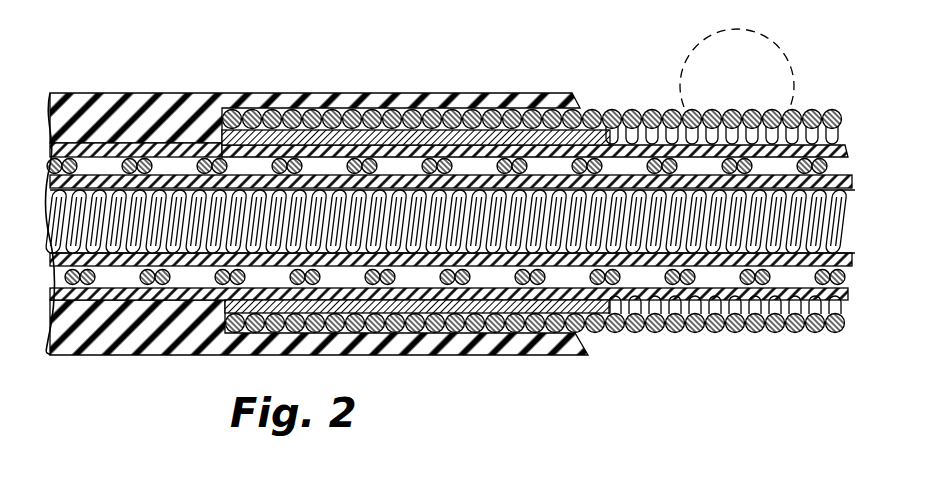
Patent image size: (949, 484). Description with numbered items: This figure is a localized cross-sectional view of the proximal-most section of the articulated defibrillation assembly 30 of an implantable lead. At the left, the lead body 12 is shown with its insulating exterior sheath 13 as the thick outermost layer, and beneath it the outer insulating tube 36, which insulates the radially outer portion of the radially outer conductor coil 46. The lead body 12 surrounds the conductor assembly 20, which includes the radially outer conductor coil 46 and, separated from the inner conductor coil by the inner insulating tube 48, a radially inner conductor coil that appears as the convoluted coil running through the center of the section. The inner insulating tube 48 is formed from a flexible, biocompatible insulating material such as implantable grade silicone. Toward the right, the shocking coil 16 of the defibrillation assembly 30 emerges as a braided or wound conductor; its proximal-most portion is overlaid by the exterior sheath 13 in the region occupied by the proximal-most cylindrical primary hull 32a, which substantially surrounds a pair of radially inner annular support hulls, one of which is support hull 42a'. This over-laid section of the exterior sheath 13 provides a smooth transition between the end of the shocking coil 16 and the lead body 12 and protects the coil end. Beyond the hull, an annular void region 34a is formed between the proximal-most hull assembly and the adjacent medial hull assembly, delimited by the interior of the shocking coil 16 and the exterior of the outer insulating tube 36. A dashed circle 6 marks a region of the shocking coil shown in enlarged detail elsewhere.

The detail region 6 is at (806, 72).
The lead body 12 is at (155, 366).
The exterior sheath 13 is at (147, 67).
The shocking coil 16 is at (662, 105).
The conductor assembly 20 is at (108, 136).
The defibrillation assembly 30 is at (690, 342).
The primary hull 32a is at (522, 305).
The annular void region 34a is at (767, 324).
The outer insulating tube 36 is at (843, 143).
The inner support hull 42a' is at (416, 102).
The radially outer conductor coil 46 is at (845, 278).
The inner insulating tube 48 is at (843, 262).